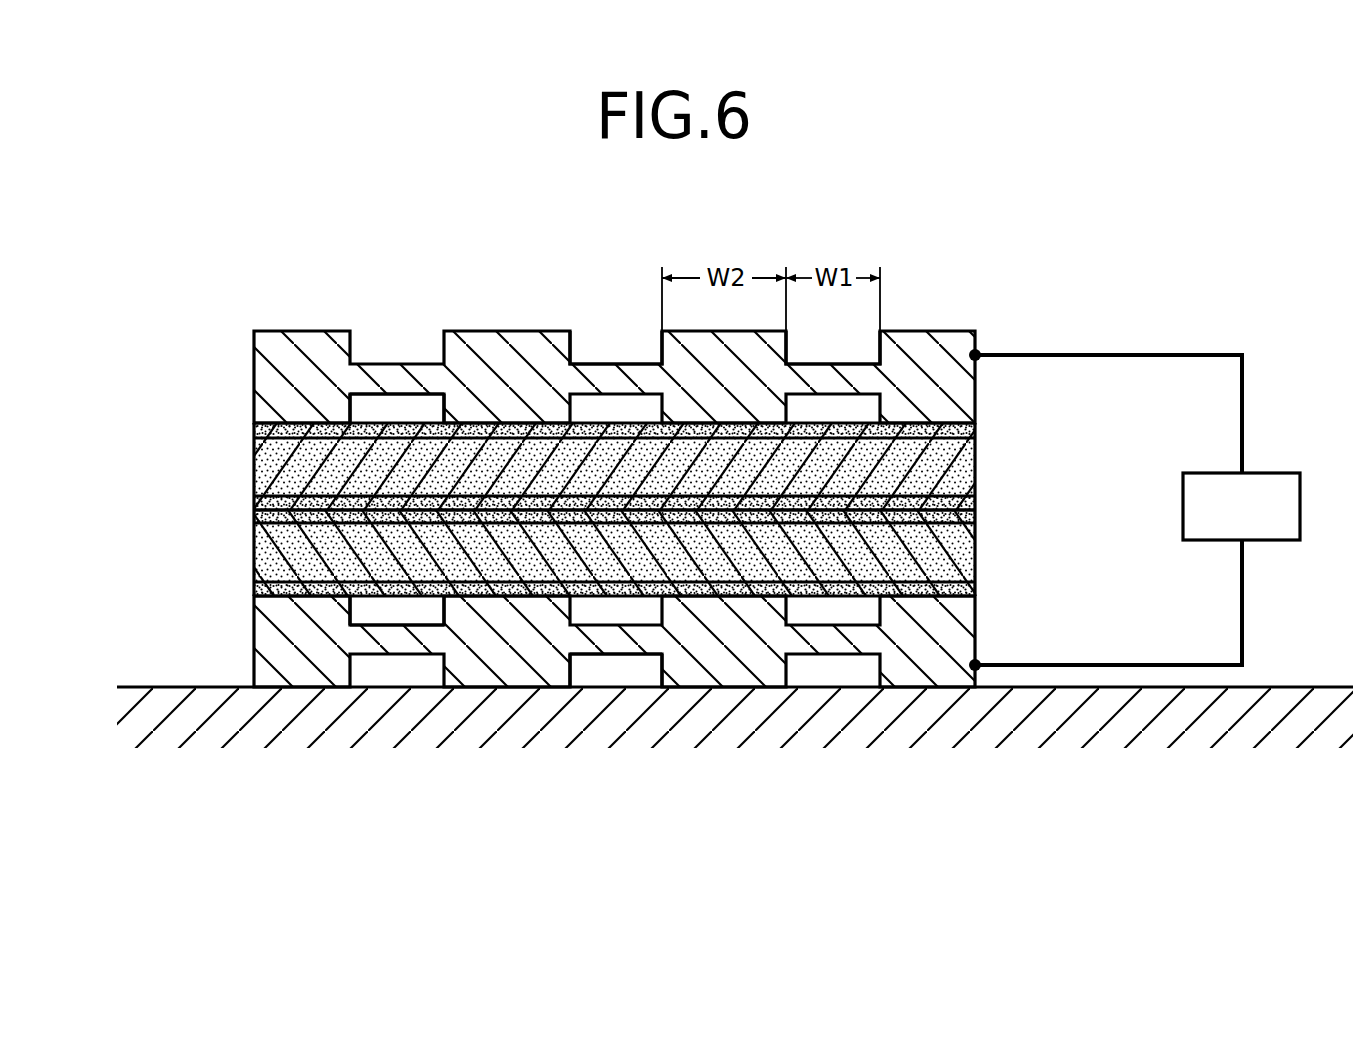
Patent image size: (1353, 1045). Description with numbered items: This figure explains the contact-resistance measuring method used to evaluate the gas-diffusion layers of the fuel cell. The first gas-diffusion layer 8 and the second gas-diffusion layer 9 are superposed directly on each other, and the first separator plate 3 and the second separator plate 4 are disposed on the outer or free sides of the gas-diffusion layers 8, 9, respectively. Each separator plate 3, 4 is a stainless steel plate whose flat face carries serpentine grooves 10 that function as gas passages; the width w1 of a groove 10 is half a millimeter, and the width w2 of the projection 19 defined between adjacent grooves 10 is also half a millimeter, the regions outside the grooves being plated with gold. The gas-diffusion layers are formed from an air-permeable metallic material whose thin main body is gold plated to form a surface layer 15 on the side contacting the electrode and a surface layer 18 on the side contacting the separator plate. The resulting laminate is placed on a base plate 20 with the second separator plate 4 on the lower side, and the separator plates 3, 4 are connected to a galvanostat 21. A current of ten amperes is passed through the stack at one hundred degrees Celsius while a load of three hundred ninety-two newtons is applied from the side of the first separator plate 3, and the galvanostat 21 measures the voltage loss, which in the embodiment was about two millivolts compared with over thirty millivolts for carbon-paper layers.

The first separator plate 3 is at (287, 365).
The second separator plate 4 is at (255, 638).
The first gas-diffusion layer 8 is at (250, 423).
The second gas-diffusion layer 9 is at (250, 510).
The groove 10 is at (858, 367).
The surface layer 15 is at (863, 503).
The surface layer 18 is at (392, 423).
The projection 19 is at (685, 330).
The base plate 20 is at (147, 687).
The galvanostat 21 is at (1222, 524).